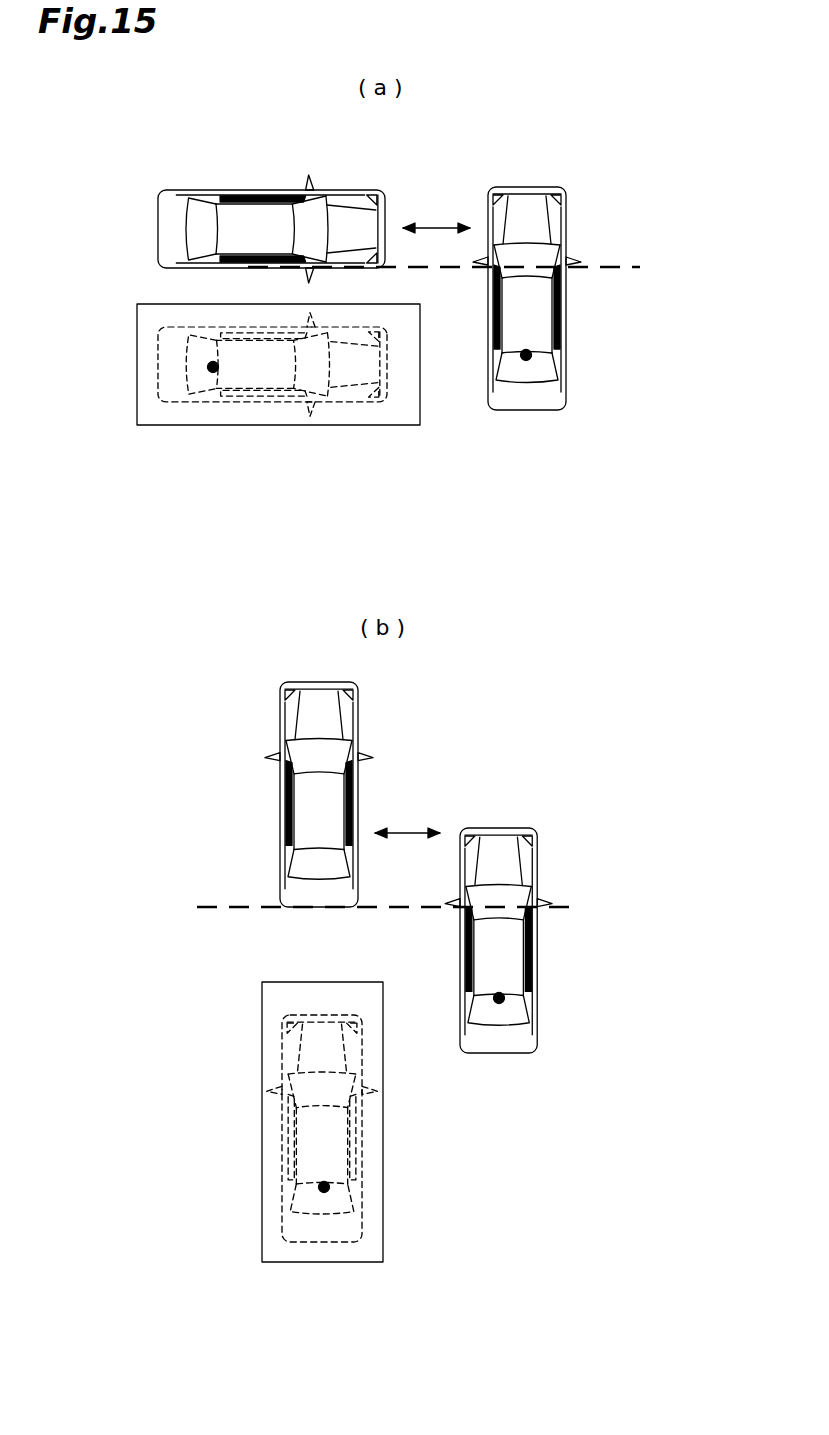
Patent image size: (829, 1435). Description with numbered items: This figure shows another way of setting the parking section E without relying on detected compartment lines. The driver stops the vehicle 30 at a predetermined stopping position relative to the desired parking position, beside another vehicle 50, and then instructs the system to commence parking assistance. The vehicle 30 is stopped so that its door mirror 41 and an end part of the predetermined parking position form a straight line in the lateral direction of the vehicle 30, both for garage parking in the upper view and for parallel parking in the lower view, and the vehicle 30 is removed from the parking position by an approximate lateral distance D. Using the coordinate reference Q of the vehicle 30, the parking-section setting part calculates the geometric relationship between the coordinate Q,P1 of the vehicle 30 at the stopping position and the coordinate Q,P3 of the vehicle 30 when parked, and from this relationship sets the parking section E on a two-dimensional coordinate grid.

The other parked vehicle 50 is at (277, 189).
The vehicle 30 is at (520, 185).
The door mirror 41 is at (472, 263).
The parking section E is at (363, 425).
The coordinate reference Q at coordinate P1 Q,P1 is at (526, 357).
The coordinate reference Q at coordinate P3 Q,P3 is at (211, 370).
The distance D is at (422, 518).